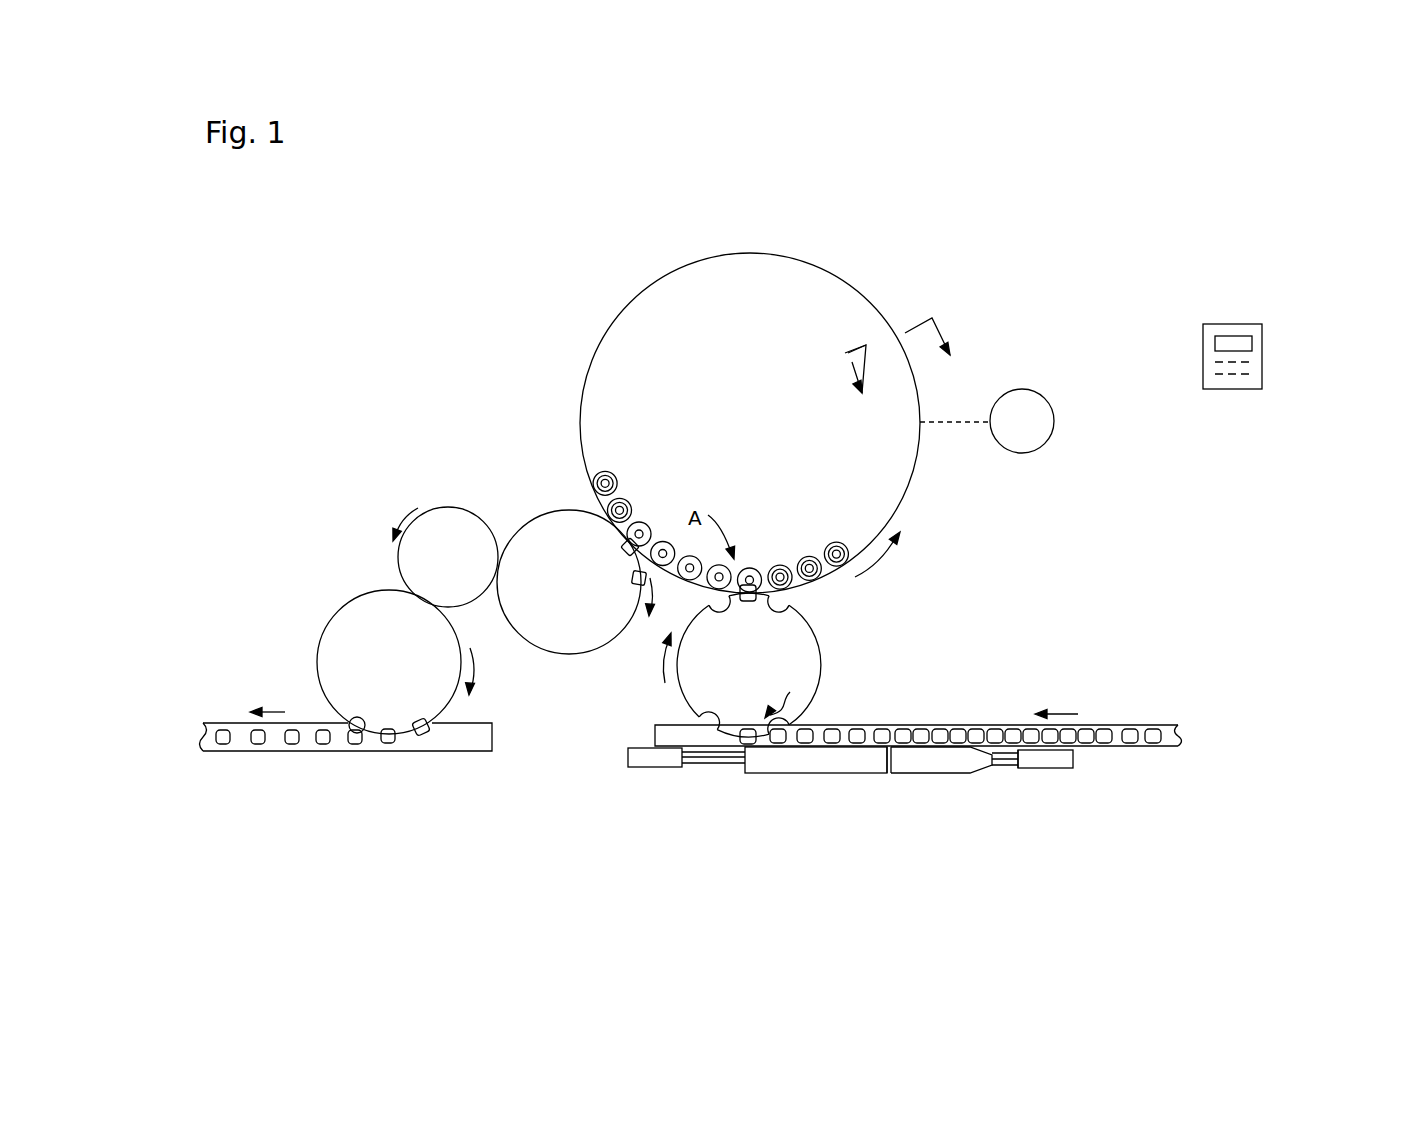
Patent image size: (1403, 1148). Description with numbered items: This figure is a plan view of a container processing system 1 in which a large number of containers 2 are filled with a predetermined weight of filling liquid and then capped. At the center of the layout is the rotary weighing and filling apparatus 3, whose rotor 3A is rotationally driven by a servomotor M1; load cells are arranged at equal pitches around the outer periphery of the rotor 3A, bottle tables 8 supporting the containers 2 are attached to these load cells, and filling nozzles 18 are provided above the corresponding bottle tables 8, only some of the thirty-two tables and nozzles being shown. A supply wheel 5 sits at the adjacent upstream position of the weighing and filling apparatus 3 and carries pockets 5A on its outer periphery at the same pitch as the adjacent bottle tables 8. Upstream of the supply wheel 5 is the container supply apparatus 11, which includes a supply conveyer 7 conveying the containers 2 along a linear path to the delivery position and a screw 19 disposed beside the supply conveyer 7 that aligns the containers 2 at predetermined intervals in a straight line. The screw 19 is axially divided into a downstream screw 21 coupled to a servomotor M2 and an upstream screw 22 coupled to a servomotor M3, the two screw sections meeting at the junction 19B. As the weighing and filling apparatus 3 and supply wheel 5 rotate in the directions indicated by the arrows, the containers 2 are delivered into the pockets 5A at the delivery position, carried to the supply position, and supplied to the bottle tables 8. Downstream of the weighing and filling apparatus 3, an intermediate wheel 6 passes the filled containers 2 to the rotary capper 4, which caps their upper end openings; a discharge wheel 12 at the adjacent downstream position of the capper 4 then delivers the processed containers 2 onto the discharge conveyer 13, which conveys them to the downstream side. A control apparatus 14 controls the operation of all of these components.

The container processing system 1 is at (990, 348).
The container 2 is at (838, 550).
The weighing and filling apparatus 3 is at (858, 404).
The rotor 3A is at (780, 273).
The capper 4 is at (453, 522).
The supply wheel 5 is at (762, 665).
The pocket 5A is at (740, 602).
The intermediate wheel 6 is at (577, 640).
The supply conveyer 7 is at (1117, 728).
The bottle table 8 is at (749, 568).
The container supply apparatus 11 is at (999, 753).
The discharge wheel 12 is at (355, 622).
The discharge conveyer 13 is at (310, 745).
The control apparatus 14 is at (1230, 324).
The filling nozzle 18 is at (758, 585).
The screw 19 is at (850, 816).
The screw joint 19B is at (881, 760).
The downstream screw 21 is at (818, 766).
The upstream screw 22 is at (931, 763).
The servomotor M1 is at (1040, 415).
The servomotor M2 is at (652, 762).
The servomotor M3 is at (1045, 764).